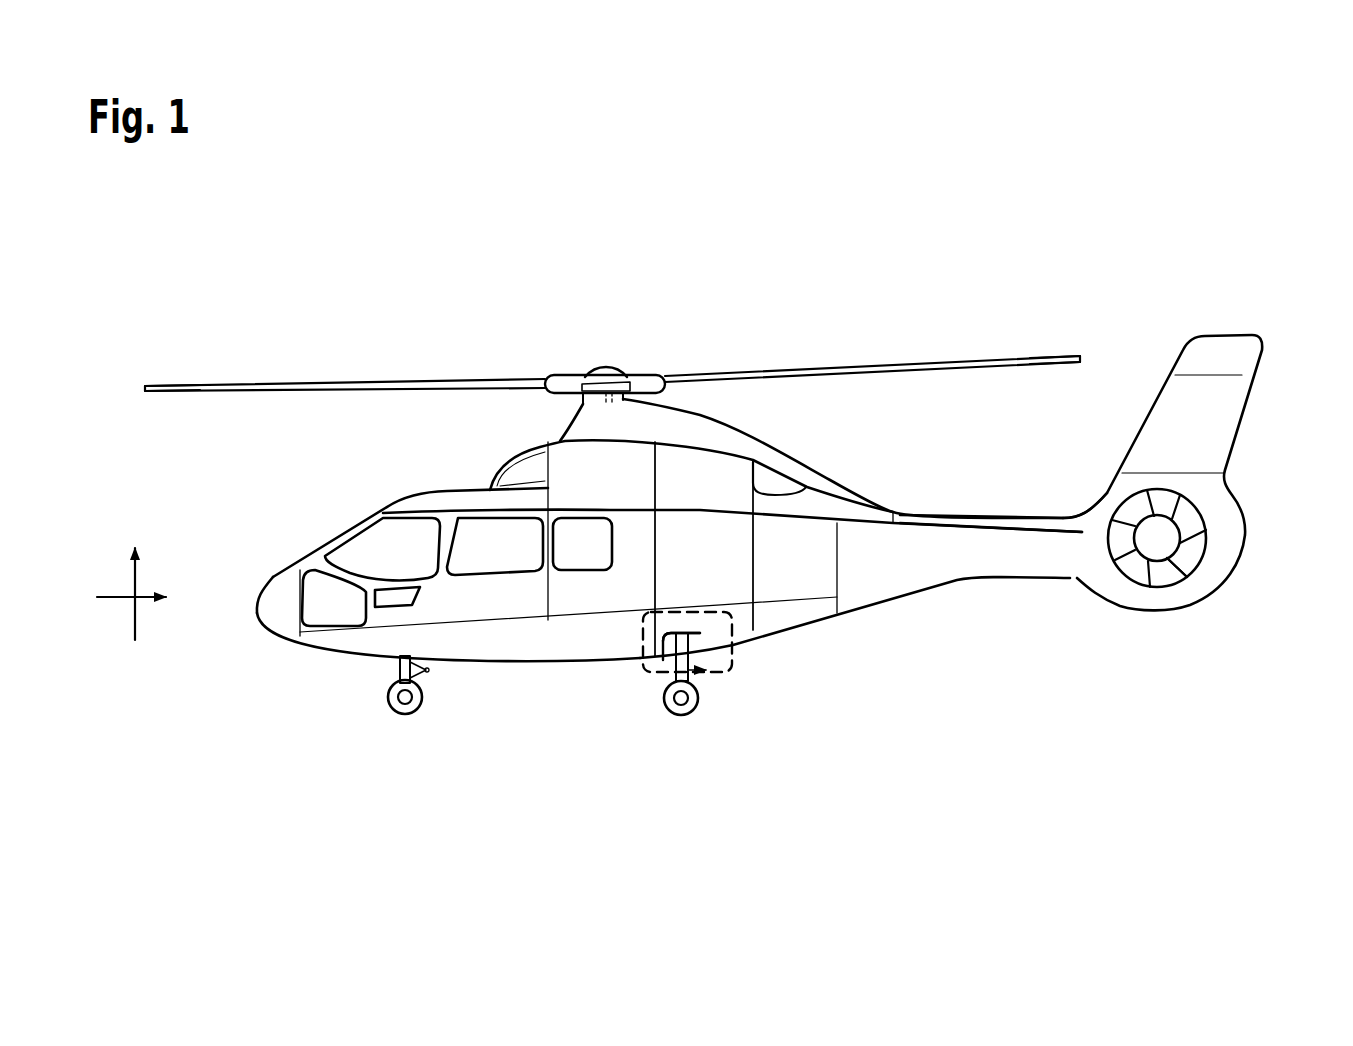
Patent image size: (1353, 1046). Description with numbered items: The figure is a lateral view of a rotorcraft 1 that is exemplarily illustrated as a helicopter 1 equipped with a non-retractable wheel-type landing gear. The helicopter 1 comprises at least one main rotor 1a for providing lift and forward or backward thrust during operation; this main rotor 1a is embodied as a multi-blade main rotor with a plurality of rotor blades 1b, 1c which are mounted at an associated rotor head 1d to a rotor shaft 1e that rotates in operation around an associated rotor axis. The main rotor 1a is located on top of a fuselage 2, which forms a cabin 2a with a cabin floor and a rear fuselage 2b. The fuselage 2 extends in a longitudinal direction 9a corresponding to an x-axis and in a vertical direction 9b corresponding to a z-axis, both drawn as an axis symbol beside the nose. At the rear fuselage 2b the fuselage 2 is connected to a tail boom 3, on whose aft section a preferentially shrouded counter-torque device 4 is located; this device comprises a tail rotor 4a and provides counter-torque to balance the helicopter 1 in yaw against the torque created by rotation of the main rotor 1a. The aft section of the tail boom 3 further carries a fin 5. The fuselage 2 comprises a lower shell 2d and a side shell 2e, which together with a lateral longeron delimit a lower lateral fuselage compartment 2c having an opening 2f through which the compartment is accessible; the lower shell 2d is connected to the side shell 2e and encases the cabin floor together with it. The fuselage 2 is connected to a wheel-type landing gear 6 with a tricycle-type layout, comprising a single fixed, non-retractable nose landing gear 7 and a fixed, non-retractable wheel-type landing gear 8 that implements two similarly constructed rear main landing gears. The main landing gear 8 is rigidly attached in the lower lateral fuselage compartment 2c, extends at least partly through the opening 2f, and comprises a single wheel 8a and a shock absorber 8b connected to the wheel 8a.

The rotorcraft 1 is at (318, 258).
The main rotor 1a is at (410, 378).
The rotor blade 1b is at (250, 387).
The rotor blade 1c is at (1045, 358).
The rotor head 1d is at (636, 358).
The rotor shaft 1e is at (588, 397).
The fuselage 2 is at (507, 605).
The cabin 2a is at (355, 542).
The rear fuselage 2b is at (839, 615).
The lower lateral fuselage compartment 2c is at (720, 676).
The lower shell 2d is at (558, 664).
The side shell 2e is at (702, 573).
The opening 2f is at (667, 656).
The tail boom 3 is at (978, 548).
The counter-torque device 4 is at (1218, 521).
The tail rotor 4a is at (1162, 569).
The fin 5 is at (1208, 387).
The wheel-type landing gear 6 is at (374, 690).
The nose landing gear 7 is at (407, 726).
The non-retractable wheel-type landing gear 8 is at (687, 726).
The wheel 8a is at (667, 710).
The shock absorber 8b is at (706, 641).
The longitudinal direction 9a is at (116, 602).
The vertical direction 9b is at (120, 577).